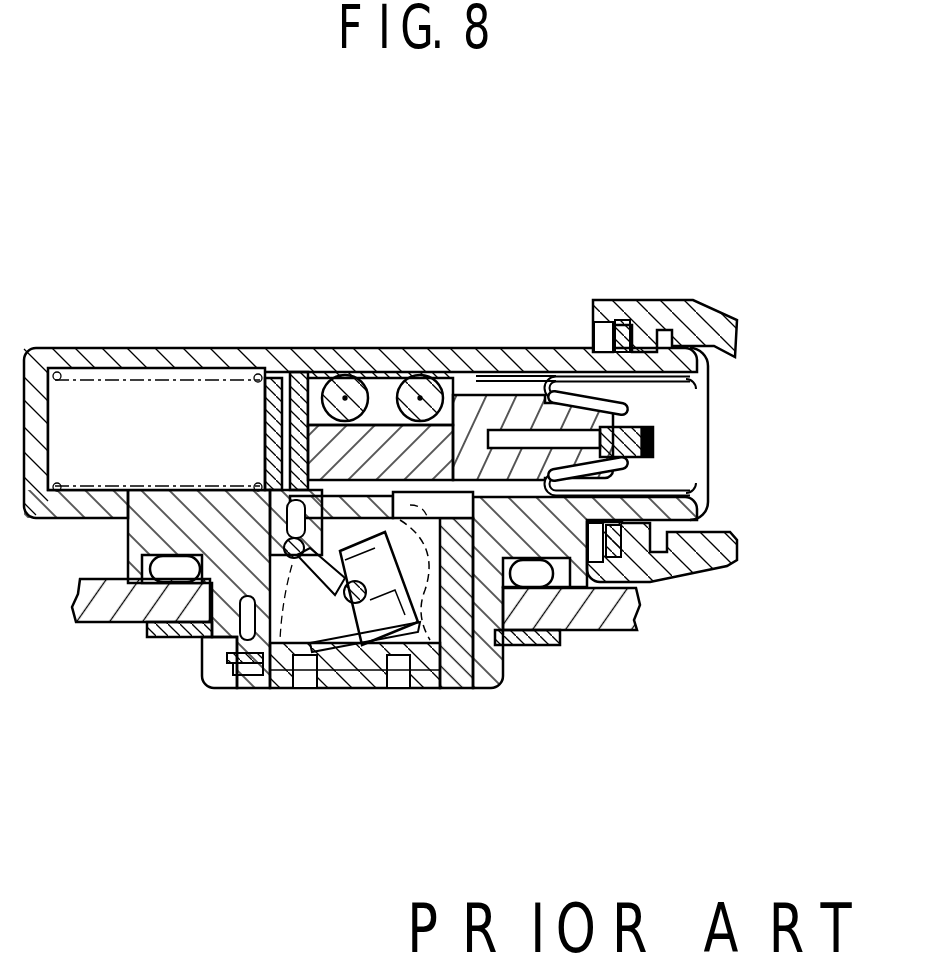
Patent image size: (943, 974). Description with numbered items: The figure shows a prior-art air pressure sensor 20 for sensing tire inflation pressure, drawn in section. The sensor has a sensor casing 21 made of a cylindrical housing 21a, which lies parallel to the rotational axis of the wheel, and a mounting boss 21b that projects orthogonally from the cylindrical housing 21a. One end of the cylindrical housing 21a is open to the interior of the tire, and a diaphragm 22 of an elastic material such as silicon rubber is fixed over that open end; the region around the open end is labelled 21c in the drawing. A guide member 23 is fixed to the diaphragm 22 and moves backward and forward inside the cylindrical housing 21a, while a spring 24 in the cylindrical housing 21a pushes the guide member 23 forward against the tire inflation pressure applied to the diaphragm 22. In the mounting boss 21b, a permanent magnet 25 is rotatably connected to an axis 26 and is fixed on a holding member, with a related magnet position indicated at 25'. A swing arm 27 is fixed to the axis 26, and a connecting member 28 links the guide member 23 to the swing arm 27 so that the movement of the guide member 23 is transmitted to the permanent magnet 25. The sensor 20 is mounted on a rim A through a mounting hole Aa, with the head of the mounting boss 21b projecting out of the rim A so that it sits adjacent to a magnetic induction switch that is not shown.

The air pressure sensor 20 is at (405, 292).
The sensor casing 21 is at (57, 318).
The cylindrical housing 21a is at (160, 348).
The mounting boss 21b is at (210, 667).
The shell receiving portion 21c is at (685, 460).
The diaphragm 22 is at (670, 396).
The guide member 23 is at (477, 400).
The spring 24 is at (245, 348).
The permanent magnet 25 is at (433, 635).
The pawl plate 25' is at (365, 700).
The axis 26 is at (343, 650).
The swing arm 27 is at (296, 560).
The connecting member 28 is at (302, 348).
The rim A is at (98, 607).
The mounting hole Aa is at (533, 645).